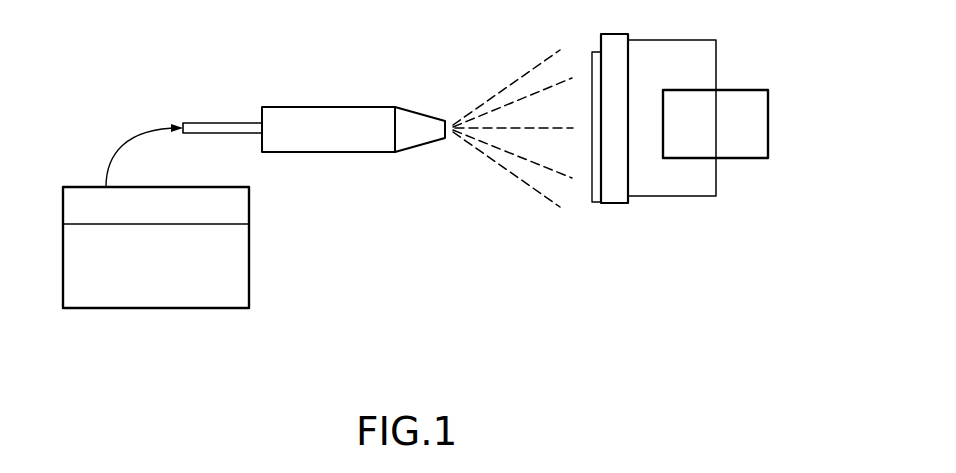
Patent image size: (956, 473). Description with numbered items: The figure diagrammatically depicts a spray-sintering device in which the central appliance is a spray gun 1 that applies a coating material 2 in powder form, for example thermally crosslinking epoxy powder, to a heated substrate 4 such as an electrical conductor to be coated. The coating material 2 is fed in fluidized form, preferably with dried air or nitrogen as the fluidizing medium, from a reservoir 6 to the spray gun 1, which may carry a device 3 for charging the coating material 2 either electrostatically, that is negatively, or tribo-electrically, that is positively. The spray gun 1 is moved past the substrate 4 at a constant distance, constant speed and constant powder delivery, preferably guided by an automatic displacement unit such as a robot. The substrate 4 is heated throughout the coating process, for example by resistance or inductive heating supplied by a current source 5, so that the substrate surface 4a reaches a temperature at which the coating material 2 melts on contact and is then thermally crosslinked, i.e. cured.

The spray gun 1 is at (340, 120).
The coating material 2 is at (518, 75).
The device for charging the coating material 3 is at (397, 152).
The heated substrate 4 is at (618, 203).
The substrate surface 4a is at (597, 203).
The current source 5 is at (762, 132).
The reservoir 6 is at (154, 308).